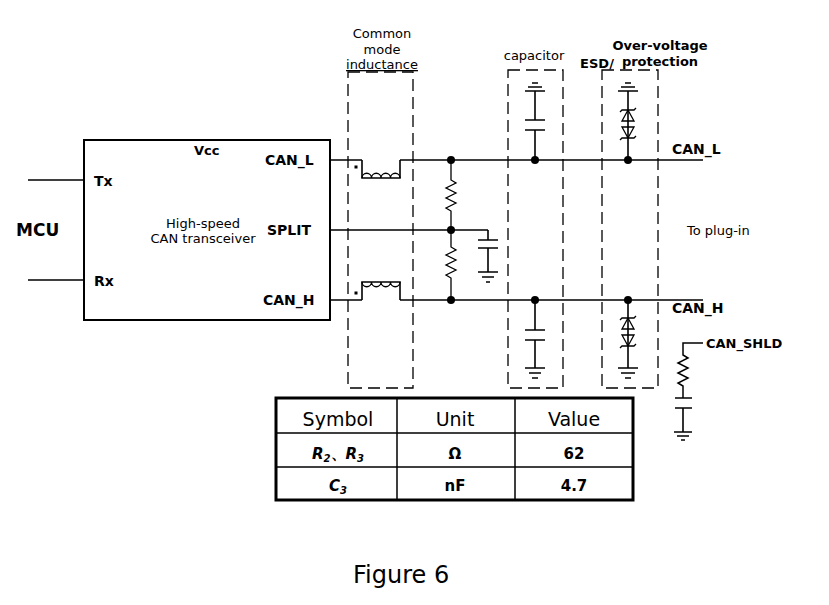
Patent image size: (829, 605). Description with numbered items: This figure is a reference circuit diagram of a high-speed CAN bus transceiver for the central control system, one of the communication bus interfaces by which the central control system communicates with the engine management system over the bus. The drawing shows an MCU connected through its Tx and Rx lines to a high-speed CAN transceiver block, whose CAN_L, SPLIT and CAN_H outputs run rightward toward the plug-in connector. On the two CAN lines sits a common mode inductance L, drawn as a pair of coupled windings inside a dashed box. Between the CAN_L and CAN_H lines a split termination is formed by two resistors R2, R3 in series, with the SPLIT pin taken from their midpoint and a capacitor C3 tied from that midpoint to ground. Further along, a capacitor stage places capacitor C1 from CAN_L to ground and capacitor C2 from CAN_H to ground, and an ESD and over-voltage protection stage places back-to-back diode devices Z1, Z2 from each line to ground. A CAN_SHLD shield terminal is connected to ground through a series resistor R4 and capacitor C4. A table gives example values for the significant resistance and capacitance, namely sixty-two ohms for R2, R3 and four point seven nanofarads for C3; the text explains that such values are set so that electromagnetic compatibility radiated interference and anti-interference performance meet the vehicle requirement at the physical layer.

The common mode inductance L is at (378, 221).
The termination resistor R2 is at (459, 195).
The termination resistor R3 is at (459, 267).
The CAN_L filter capacitor C1 is at (540, 123).
The CAN_H filter capacitor C2 is at (540, 337).
The split capacitor C3 is at (488, 249).
The CAN_L ESD/over-voltage protection diode Z1 is at (634, 123).
The CAN_H ESD/over-voltage protection diode Z2 is at (634, 337).
The shield resistor R4 is at (696, 370).
The shield capacitor C4 is at (694, 419).